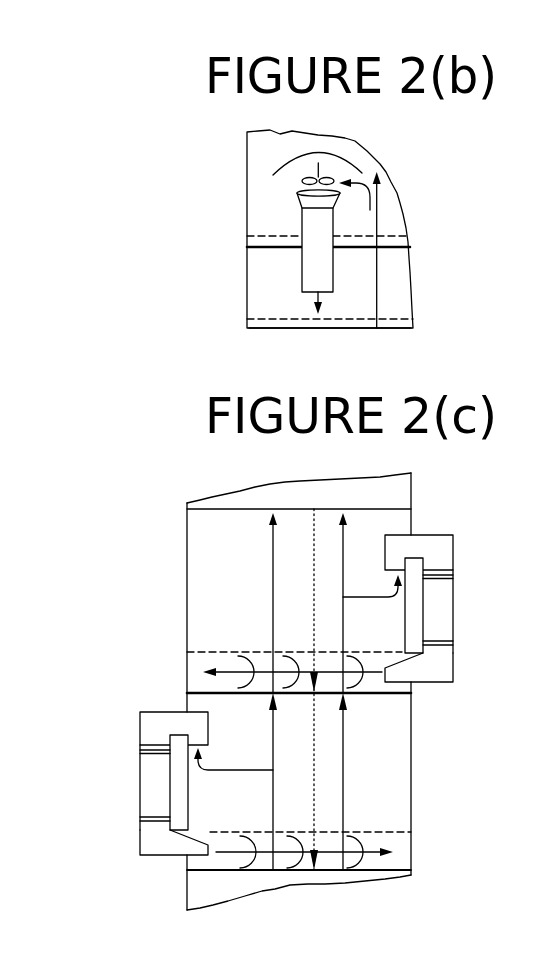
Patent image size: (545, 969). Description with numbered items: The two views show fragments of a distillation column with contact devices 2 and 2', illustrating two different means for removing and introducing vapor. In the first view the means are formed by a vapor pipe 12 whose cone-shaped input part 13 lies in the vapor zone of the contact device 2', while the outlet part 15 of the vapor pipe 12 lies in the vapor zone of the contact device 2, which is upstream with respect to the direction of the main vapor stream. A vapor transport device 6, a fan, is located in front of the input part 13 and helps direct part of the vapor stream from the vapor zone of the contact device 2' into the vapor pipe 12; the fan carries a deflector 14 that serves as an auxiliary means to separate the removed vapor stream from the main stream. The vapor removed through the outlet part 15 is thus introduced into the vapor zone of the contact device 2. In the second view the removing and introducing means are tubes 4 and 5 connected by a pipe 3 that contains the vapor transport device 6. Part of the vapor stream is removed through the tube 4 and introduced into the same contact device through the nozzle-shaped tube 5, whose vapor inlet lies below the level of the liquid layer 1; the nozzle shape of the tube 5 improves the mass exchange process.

In FIG. 2B, the liquid layer 1 is at (366, 250).
In FIG. 2B, the contact device 2 is at (310, 308).
In FIG. 2C, the contact device 2 is at (275, 866).
In FIG. 2B, the contact device 2' is at (298, 226).
In FIG. 2C, the contact device 2' is at (275, 673).
In FIG. 2C, the pipe 3 is at (453, 548).
In FIG. 2C, the tube 4 is at (405, 558).
In FIG. 2C, the tube 5 is at (393, 670).
In FIG. 2B, the vapor transport device 6 is at (313, 177).
In FIG. 2C, the vapor transport device 6 is at (443, 603).
In FIG. 2B, the vapor pipe 12 is at (320, 228).
In FIG. 2B, the input part 13 is at (370, 200).
In FIG. 2B, the deflector 14 is at (360, 165).
In FIG. 2B, the outlet part 15 is at (320, 290).